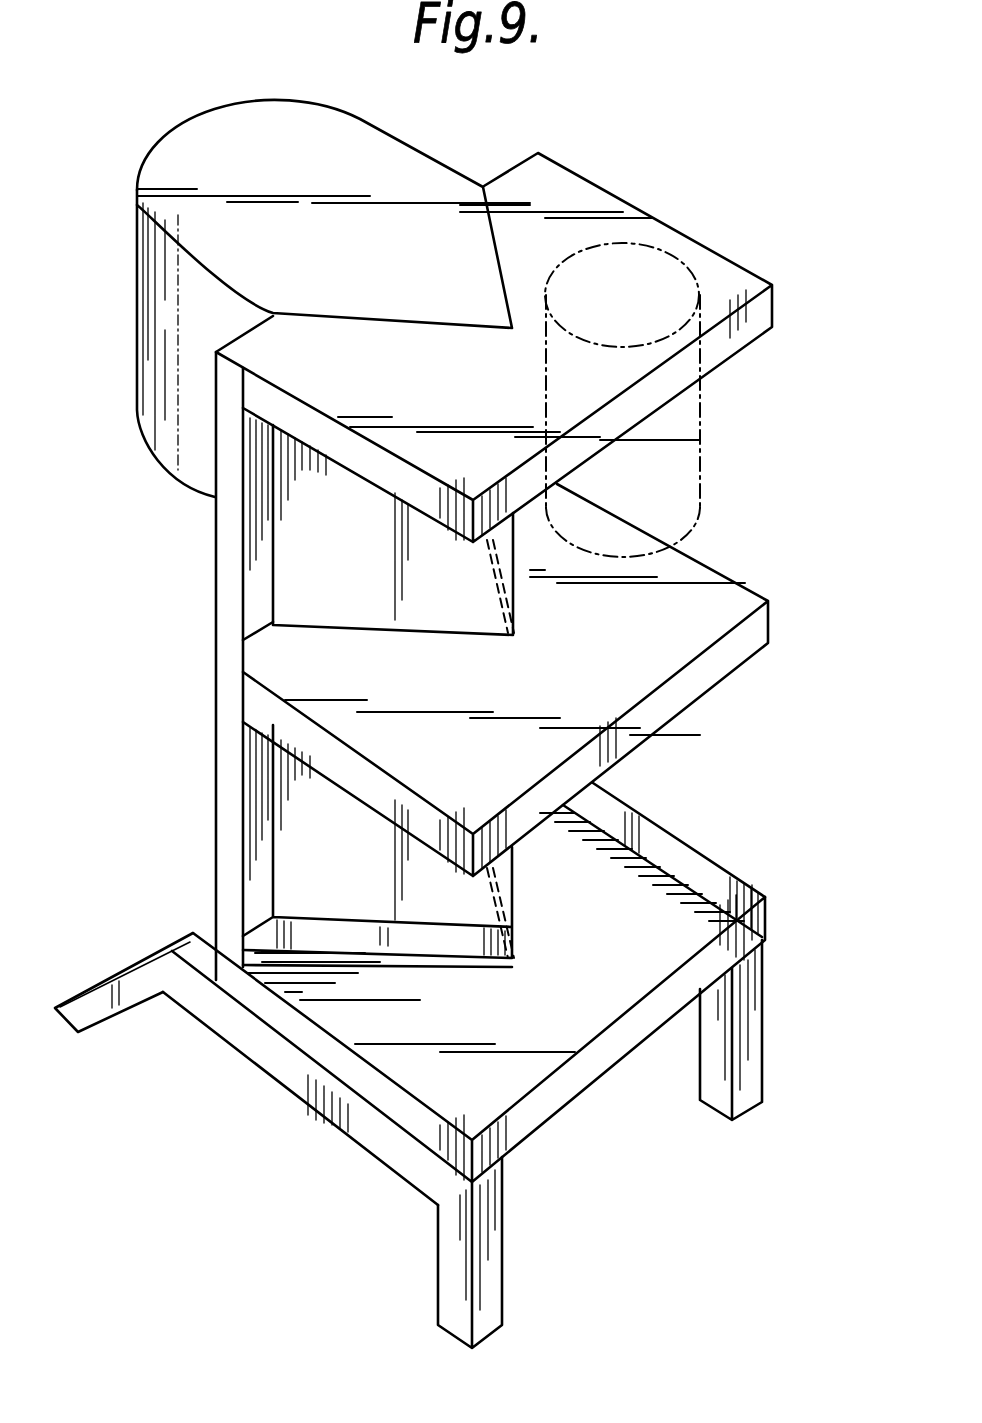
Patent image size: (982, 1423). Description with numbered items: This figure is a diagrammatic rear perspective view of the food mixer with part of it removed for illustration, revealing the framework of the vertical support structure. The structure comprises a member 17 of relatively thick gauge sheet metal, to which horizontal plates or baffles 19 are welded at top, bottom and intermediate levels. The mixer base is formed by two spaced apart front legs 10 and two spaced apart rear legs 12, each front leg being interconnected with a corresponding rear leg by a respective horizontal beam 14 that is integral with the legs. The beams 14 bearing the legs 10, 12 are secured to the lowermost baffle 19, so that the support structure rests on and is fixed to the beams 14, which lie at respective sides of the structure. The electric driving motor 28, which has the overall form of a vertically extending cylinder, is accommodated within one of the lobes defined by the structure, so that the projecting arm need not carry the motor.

The front legs 10 is at (124, 972).
The rear legs 12 is at (492, 1247).
The horizontal beam 14 is at (267, 1062).
The member 17 is at (230, 590).
The horizontal plates or baffles 19 is at (762, 315).
The electric driving motor 28 is at (722, 446).